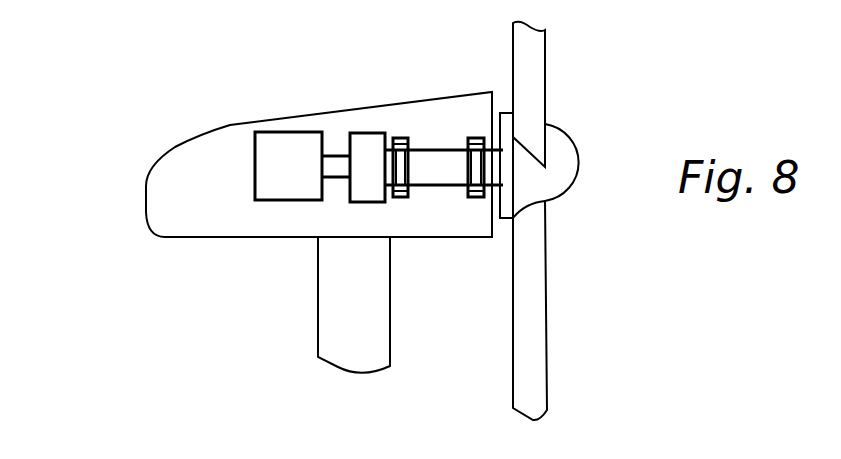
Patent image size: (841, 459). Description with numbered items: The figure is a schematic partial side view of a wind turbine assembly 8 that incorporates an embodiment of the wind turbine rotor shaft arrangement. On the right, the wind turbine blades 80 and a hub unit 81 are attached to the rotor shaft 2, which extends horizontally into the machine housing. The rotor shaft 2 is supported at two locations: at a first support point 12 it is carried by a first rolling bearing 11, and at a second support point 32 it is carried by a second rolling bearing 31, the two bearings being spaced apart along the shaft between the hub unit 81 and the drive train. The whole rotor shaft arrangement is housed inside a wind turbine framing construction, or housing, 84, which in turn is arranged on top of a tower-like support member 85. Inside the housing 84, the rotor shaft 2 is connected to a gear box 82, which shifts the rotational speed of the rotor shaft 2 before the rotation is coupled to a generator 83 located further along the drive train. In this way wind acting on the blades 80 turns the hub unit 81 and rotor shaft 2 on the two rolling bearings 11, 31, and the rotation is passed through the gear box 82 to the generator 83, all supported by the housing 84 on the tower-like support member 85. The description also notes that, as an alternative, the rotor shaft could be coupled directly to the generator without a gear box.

The wind turbine assembly 8 is at (84, 113).
The wind turbine framing construction 84 is at (190, 138).
The tower-like support member 85 is at (335, 308).
The generator 83 is at (270, 148).
The gear box 82 is at (368, 148).
The rotor shaft 2 is at (428, 172).
The second rolling bearing 31 is at (400, 138).
The first rolling bearing 11 is at (475, 138).
The second support point 32 is at (401, 216).
The first support point 12 is at (476, 216).
The hub unit 81 is at (558, 175).
The wind turbine blades 80 is at (540, 92).